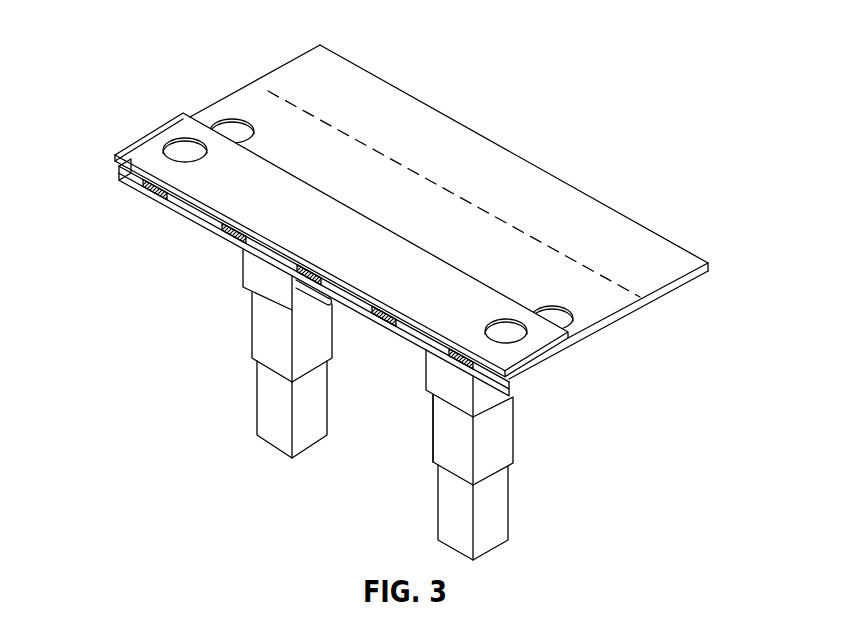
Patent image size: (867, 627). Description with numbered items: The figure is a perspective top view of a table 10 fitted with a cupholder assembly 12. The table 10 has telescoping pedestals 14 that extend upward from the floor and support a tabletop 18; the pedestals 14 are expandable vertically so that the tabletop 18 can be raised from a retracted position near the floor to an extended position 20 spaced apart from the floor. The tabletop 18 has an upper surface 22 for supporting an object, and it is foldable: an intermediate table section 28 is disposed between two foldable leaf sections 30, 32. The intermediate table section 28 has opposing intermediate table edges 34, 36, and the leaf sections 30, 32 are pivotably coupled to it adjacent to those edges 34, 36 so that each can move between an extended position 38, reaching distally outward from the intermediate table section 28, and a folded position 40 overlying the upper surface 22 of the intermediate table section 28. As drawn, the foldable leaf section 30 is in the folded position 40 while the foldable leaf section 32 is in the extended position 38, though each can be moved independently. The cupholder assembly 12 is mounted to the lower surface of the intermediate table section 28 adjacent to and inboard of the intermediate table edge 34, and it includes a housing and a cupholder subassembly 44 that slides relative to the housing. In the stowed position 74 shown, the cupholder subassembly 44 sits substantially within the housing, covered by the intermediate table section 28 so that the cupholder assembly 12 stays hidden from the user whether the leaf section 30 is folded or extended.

The table 10 is at (513, 432).
The cupholder assembly 12 is at (343, 306).
The telescoping pedestals 14 is at (312, 422).
The tabletop 18 is at (652, 288).
The extended position 20 is at (642, 333).
The upper surface 22 is at (297, 80).
The intermediate table section 28 is at (220, 118).
The foldable leaf section 30 is at (220, 204).
The foldable leaf section 32 is at (382, 82).
The intermediate table edge 34 is at (122, 174).
The intermediate table edge 36 is at (565, 257).
The extended position 38 is at (447, 40).
The folded position 40 is at (120, 133).
The cupholder subassembly 44 is at (315, 297).
The stowed position 74 is at (258, 272).